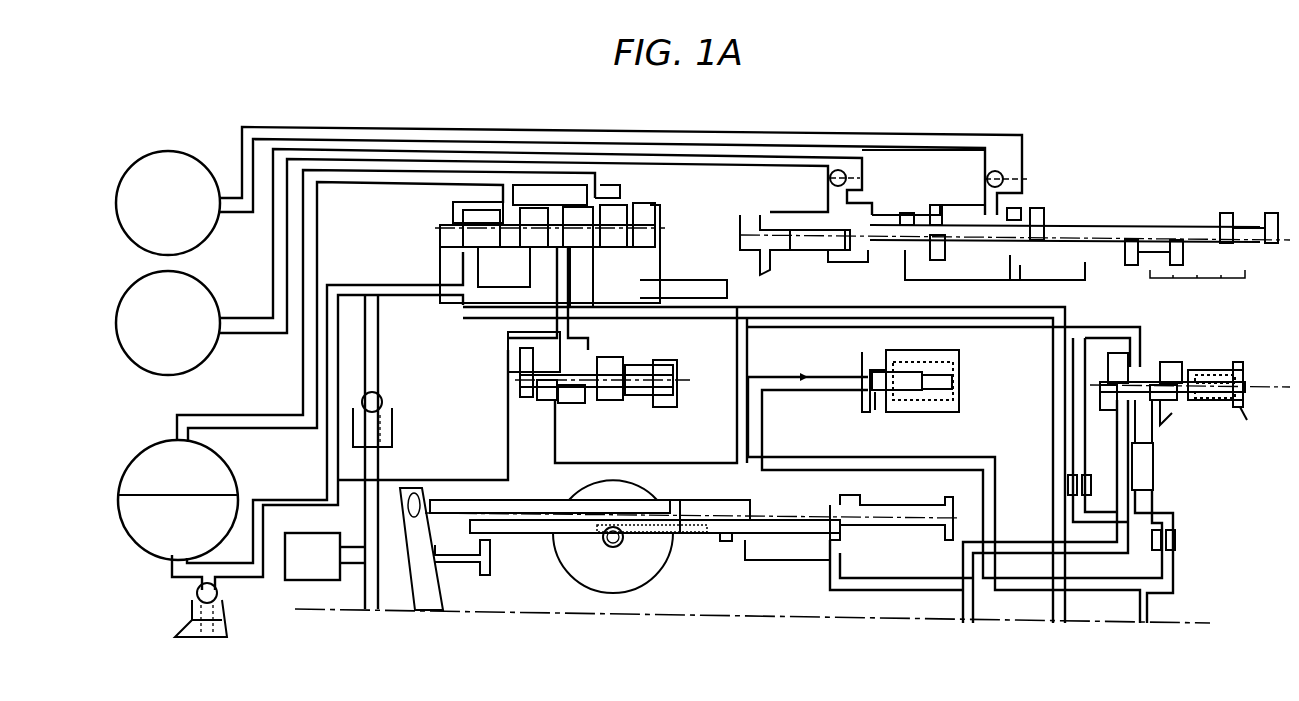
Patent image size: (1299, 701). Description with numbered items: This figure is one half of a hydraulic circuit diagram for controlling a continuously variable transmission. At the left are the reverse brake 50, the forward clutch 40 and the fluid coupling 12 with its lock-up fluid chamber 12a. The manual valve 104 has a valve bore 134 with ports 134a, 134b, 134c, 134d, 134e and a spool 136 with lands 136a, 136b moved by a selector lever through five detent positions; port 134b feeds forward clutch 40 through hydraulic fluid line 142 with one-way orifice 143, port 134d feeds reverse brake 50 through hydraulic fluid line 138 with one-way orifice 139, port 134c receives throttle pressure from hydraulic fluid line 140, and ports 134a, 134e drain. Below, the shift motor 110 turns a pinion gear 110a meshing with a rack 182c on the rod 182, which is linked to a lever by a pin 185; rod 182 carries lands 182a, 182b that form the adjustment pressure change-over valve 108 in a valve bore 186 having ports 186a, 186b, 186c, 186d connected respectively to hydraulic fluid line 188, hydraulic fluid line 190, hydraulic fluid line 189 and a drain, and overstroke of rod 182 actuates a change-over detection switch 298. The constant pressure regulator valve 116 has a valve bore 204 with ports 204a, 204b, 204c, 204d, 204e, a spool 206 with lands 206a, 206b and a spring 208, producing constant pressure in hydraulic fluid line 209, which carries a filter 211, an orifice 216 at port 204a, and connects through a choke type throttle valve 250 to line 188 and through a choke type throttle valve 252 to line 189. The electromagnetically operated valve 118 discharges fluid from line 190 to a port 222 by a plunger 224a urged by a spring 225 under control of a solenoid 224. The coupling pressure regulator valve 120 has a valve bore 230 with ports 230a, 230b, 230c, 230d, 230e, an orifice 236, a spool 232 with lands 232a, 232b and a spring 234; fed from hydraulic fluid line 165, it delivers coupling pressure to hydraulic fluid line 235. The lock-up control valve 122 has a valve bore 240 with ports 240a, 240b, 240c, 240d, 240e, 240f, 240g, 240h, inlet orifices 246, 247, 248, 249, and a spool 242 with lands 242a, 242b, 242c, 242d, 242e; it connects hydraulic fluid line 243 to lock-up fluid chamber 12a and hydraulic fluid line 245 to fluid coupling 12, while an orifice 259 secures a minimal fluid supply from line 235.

The fluid coupling 12 is at (150, 552).
The lock-up fluid chamber 12a is at (226, 465).
The forward clutch 40 is at (210, 290).
The reverse brake 50 is at (208, 170).
The manual valve 104 is at (1045, 178).
The adjustment pressure change-over valve 108 is at (795, 540).
The shift motor 110 is at (555, 575).
The pinion gear 110a is at (620, 548).
The constant pressure regulator valve 116 is at (1170, 415).
The electromagnetically operated valve 118 is at (855, 370).
The coupling pressure regulator valve 120 is at (655, 405).
The lock-up control valve 122 is at (395, 232).
The valve bore 134 is at (1085, 212).
The port 134a is at (768, 265).
The port 134b is at (841, 269).
The port 134c is at (870, 295).
The port 134d is at (985, 258).
The port 134e is at (1012, 265).
The spool 136 is at (1170, 225).
The land 136a is at (915, 222).
The land 136b is at (1035, 218).
The hydraulic fluid line 138 is at (923, 182).
The one-way orifice 139 is at (1003, 170).
The hydraulic fluid line 140 is at (1057, 434).
The hydraulic fluid line 142 is at (730, 160).
The one-way orifice 143 is at (858, 180).
The hydraulic fluid line 165 is at (843, 470).
The rod 182 is at (520, 523).
The land 182a is at (726, 541).
The land 182b is at (876, 528).
The rack 182c is at (680, 535).
The pin 185 is at (445, 549).
The valve bore 186 is at (893, 500).
The port 186a is at (745, 540).
The port 186b is at (758, 545).
The port 186c is at (840, 565).
The port 186d is at (950, 540).
The hydraulic fluid line 188 is at (738, 355).
The hydraulic fluid line 189 is at (860, 582).
The hydraulic fluid line 190 is at (762, 424).
The valve bore 204 is at (1220, 368).
The port 204a is at (1095, 402).
The port 204b is at (1125, 432).
The port 204c is at (1145, 410).
The port 204d is at (1175, 420).
The port 204e is at (1243, 412).
The spool 206 is at (1240, 375).
The land 206a is at (1120, 370).
The land 206b is at (1165, 372).
The spring 208 is at (1238, 392).
The hydraulic fluid line 209 is at (1032, 320).
The filter 211 is at (1153, 478).
The orifice 216 is at (1100, 370).
The port 222 is at (875, 412).
The solenoid 224 is at (940, 358).
The plunger 224a is at (882, 370).
The spring 225 is at (955, 382).
The valve bore 230 is at (672, 362).
The port 230a is at (540, 398).
The port 230b is at (560, 410).
The port 230c is at (578, 405).
The port 230d is at (605, 400).
The port 230e is at (675, 405).
The spool 232 is at (535, 385).
The land 232a is at (545, 372).
The land 232b is at (605, 380).
The spring 234 is at (660, 380).
The hydraulic fluid line 235 is at (593, 277).
The orifice 236 is at (530, 370).
The valve bore 240 is at (640, 215).
The port 240a is at (465, 250).
The port 240b is at (465, 260).
The port 240c is at (504, 267).
The port 240d is at (500, 300).
The port 240e is at (540, 310).
The port 240f is at (655, 240).
The port 240g is at (630, 270).
The port 240h is at (655, 265).
The spool 242 is at (448, 235).
The land 242a is at (448, 226).
The land 242b is at (498, 226).
The land 242c is at (550, 193).
The land 242d is at (590, 208).
The land 242e is at (655, 218).
The hydraulic fluid line 243 is at (318, 219).
The hydraulic fluid line 245 is at (340, 350).
The orifice 246 is at (470, 275).
The orifice 247 is at (510, 195).
The orifice 248 is at (610, 270).
The orifice 249 is at (650, 283).
The choke type throttle valve 250 is at (222, 600).
The choke type throttle valve 252 is at (382, 400).
The orifice 259 is at (460, 480).
The change-over detection switch 298 is at (310, 533).